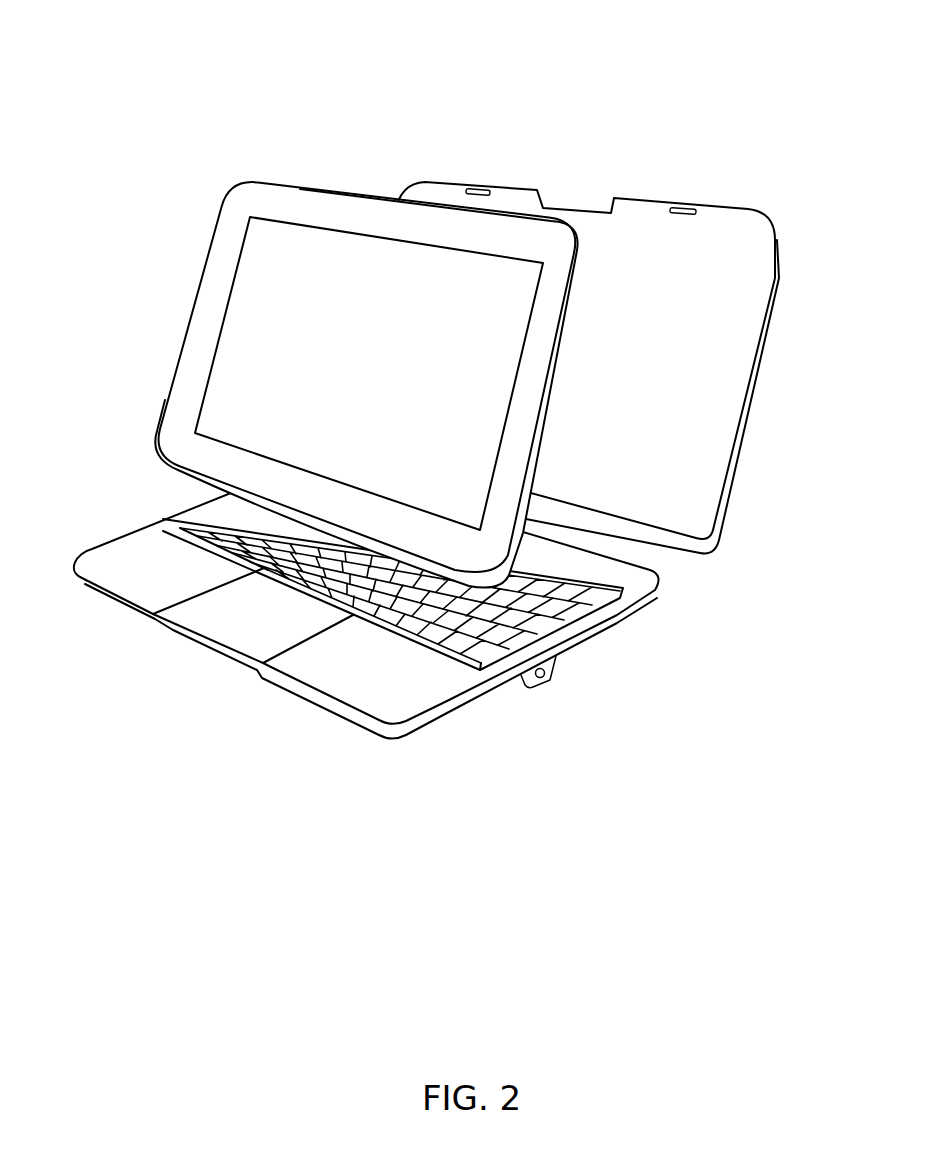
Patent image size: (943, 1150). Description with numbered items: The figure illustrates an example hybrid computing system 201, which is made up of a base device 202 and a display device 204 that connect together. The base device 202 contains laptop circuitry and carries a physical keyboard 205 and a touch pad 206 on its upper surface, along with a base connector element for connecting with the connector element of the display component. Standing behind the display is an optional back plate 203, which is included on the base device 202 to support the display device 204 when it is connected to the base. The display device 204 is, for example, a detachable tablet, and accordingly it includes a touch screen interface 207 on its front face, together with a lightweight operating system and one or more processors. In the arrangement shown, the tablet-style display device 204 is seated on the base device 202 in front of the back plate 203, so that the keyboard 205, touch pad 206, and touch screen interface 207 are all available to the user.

The hybrid computing system 201 is at (211, 86).
The base device 202 is at (140, 537).
The back plate 203 is at (725, 228).
The display device 204 is at (230, 217).
The physical keyboard 205 is at (507, 616).
The touch pad 206 is at (220, 607).
The touch screen interface 207 is at (243, 315).